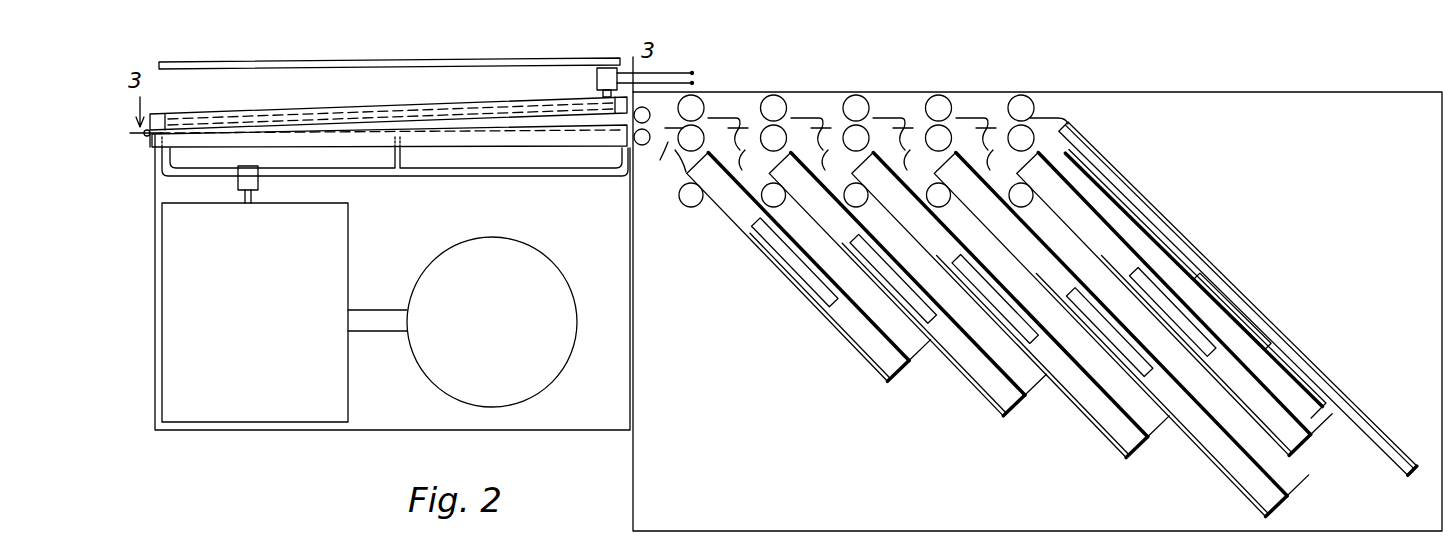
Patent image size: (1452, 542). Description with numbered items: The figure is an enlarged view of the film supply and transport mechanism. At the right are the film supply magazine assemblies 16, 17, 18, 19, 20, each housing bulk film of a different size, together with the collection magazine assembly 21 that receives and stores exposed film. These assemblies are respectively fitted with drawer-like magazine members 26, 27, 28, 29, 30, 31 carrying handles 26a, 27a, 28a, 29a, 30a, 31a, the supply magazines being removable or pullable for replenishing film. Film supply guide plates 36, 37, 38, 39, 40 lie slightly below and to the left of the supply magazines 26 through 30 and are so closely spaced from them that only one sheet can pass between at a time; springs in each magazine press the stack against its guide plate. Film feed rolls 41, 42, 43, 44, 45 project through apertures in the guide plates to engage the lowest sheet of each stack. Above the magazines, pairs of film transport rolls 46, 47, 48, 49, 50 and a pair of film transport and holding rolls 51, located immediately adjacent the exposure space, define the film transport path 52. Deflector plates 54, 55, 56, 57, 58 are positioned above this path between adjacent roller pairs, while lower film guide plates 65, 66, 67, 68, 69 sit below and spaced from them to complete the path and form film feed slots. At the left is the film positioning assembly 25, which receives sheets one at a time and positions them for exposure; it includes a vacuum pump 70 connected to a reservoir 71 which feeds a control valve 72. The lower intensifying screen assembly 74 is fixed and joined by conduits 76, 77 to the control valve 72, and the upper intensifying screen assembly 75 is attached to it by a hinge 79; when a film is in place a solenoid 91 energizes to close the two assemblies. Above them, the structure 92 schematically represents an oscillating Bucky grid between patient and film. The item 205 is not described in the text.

The film supply magazine assembly 16 is at (910, 378).
The film supply magazine assembly 17 is at (1022, 418).
The film supply magazine assembly 18 is at (1138, 449).
The film supply magazine assembly 19 is at (1292, 487).
The film supply magazine assembly 20 is at (1307, 432).
The collection magazine assembly 21 is at (1370, 422).
The film positioning assembly 25 is at (353, 448).
The magazine member 26 is at (857, 333).
The handle 26a is at (815, 282).
The magazine member 27 is at (978, 370).
The handle 27a is at (922, 320).
The magazine member 28 is at (1100, 432).
The handle 28a is at (1023, 342).
The magazine member 29 is at (1228, 450).
The handle 29a is at (1160, 400).
The magazine member 30 is at (1256, 390).
The handle 30a is at (1160, 275).
The magazine member 31 is at (1322, 372).
The handle 31a is at (1256, 314).
The film supply guide plate 36 is at (782, 260).
The film supply guide plate 37 is at (822, 230).
The film supply guide plate 38 is at (910, 243).
The film supply guide plate 39 is at (992, 243).
The film supply guide plate 40 is at (1072, 240).
The film feed roll 41 is at (688, 207).
The film feed roll 42 is at (760, 208).
The film feed roll 43 is at (863, 208).
The film feed roll 44 is at (945, 208).
The film feed roll 45 is at (1028, 208).
The pair of film transport rolls 46 is at (706, 100).
The pair of film transport rolls 47 is at (788, 116).
The pair of film transport rolls 48 is at (864, 100).
The pair of film transport rolls 49 is at (942, 100).
The pair of film transport rolls 50 is at (1022, 100).
The pair of film transport and holding rolls 51 is at (664, 158).
The film transport path 52 is at (1026, 127).
The film deflector plate 54 is at (674, 103).
The film deflector plate 55 is at (742, 116).
The film deflector plate 56 is at (816, 116).
The film deflector plate 57 is at (898, 117).
The film deflector plate 58 is at (980, 117).
The film guide plate 65 is at (676, 152).
The film guide plate 66 is at (742, 166).
The film guide plate 67 is at (822, 166).
The film guide plate 68 is at (906, 166).
The film guide plate 69 is at (990, 166).
The vacuum pump 70 is at (548, 263).
The reservoir 71 is at (350, 242).
The control valve 72 is at (262, 184).
The intensifying screen assembly 74 is at (487, 150).
The intensifying screen assembly 75 is at (436, 105).
The conduit 76 is at (175, 155).
The conduit 77 is at (440, 178).
The hinge 79 is at (150, 140).
The solenoid 91 is at (597, 78).
The oscillating grid 92 is at (229, 70).
The exit guide 205 is at (1080, 122).